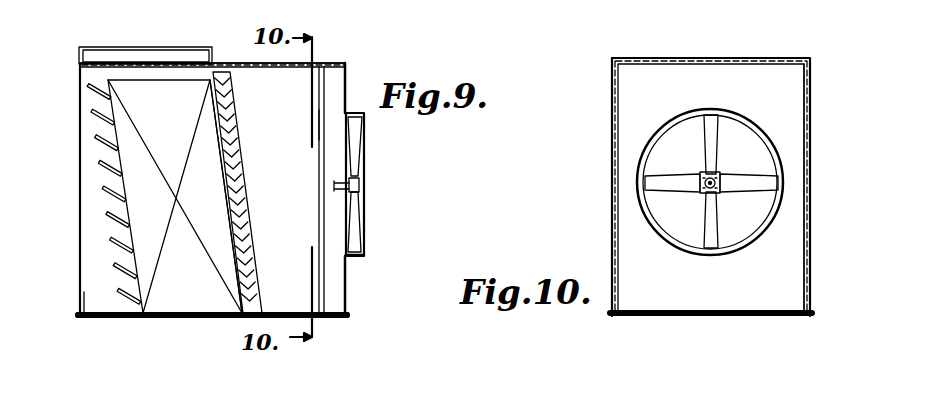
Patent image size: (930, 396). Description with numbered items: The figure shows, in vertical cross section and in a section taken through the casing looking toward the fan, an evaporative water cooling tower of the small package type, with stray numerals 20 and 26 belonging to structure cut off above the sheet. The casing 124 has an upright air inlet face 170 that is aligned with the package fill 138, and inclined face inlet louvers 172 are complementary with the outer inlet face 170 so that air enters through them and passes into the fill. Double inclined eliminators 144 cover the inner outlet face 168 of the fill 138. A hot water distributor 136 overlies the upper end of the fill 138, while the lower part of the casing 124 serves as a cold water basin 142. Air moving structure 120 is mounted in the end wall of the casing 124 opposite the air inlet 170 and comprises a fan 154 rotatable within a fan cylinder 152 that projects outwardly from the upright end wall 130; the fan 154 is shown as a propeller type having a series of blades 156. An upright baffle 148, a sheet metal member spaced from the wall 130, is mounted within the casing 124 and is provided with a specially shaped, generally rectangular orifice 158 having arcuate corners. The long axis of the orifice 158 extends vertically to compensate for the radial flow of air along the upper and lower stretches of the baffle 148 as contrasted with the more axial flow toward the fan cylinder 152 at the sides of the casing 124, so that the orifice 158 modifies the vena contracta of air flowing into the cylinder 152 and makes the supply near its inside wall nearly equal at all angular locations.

In FIG. 9, the air treatment unit (partial) 20 is at (474, 0).
In FIG. 10, the housing (partial) 26 is at (620, 0).
In FIG. 9, the air moving structure 120 is at (364, 209).
In FIG. 9, the casing 124 is at (226, 56).
In FIG. 10, the casing 124 is at (742, 52).
In FIG. 9, the upright end wall 130 is at (348, 295).
In FIG. 9, the hot water distributor 136 is at (115, 53).
In FIG. 9, the package fill 138 is at (210, 269).
In FIG. 9, the cold water basin 142 is at (188, 320).
In FIG. 10, the cold water basin 142 is at (640, 312).
In FIG. 9, the double inclined eliminators 144 is at (252, 208).
In FIG. 9, the upright baffle 148 is at (320, 87).
In FIG. 10, the upright baffle 148 is at (788, 256).
In FIG. 9, the fan cylinder 152 is at (363, 255).
In FIG. 9, the fan 154 is at (360, 184).
In FIG. 10, the fan 154 is at (690, 203).
In FIG. 9, the blades 156 is at (356, 137).
In FIG. 10, the blades 156 is at (767, 181).
In FIG. 9, the orifice 158 is at (320, 124).
In FIG. 10, the orifice 158 is at (663, 120).
In FIG. 9, the inner outlet face 168 is at (213, 127).
In FIG. 9, the upright air inlet face 170 is at (80, 68).
In FIG. 9, the inclined face inlet louvers 172 is at (108, 193).